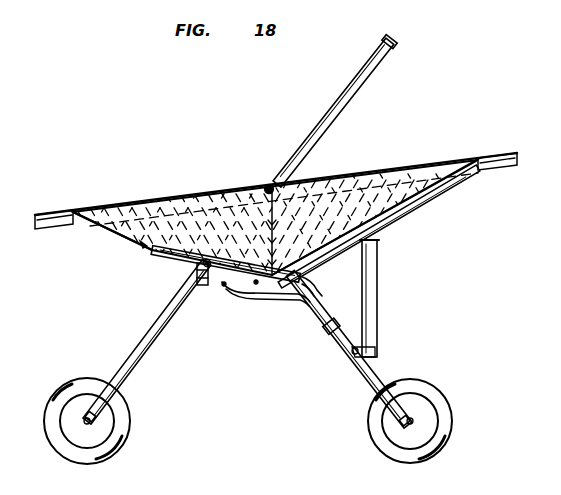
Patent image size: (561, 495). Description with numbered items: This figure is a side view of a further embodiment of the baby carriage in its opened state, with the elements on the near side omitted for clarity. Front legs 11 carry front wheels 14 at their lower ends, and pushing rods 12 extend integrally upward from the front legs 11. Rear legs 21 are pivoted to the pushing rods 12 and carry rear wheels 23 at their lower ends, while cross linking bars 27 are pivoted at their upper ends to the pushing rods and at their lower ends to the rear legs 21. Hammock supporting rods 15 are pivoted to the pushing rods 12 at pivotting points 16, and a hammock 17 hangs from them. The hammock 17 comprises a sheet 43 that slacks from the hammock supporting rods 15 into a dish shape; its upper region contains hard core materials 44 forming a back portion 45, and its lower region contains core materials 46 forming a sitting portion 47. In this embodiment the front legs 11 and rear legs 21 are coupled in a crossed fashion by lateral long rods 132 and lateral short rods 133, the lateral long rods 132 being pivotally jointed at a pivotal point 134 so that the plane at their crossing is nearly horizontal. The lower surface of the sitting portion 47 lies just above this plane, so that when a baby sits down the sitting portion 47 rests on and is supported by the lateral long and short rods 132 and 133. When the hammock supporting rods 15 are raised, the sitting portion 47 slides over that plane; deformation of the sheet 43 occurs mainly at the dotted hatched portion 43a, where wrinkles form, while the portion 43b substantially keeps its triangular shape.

The front legs 11 is at (134, 363).
The pushing rods 12 is at (390, 50).
The front wheels 14 is at (124, 430).
The hammock supporting rods 15 is at (496, 168).
The pivotting points 16 is at (266, 189).
The hammock 17 is at (401, 158).
The rear legs 21 is at (378, 380).
The rear wheels 23 is at (449, 419).
The cross linking bars 27 is at (378, 288).
The sheet 43 is at (200, 216).
The portion of the sheet 43a is at (160, 222).
The portion of the sheet 43b is at (338, 190).
The hard core materials 44 is at (387, 218).
The back portion 45 is at (431, 199).
The core materials 46 is at (207, 270).
The sitting portion 47 is at (147, 246).
The lateral long rods 132 is at (222, 288).
The lateral short rods 133 is at (195, 279).
The pivotal point 134 is at (255, 298).